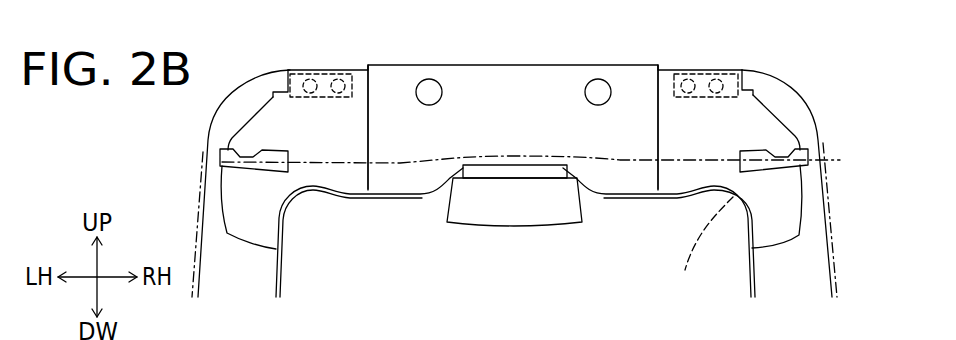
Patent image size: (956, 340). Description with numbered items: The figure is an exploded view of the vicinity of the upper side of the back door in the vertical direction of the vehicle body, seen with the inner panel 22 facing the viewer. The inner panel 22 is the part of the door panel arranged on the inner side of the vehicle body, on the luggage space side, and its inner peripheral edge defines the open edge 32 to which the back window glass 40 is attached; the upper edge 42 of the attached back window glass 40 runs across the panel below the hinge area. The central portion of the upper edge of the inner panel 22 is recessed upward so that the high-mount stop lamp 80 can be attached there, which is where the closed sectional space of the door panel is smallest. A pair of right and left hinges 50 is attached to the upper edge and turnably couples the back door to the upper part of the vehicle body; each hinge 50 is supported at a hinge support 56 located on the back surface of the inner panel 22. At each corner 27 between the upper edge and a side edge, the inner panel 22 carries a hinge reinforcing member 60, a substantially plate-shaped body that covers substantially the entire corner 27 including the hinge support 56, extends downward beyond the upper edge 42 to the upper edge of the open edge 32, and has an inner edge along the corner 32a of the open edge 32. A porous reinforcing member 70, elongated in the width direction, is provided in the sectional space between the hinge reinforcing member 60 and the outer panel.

The inner panel 22 is at (813, 98).
The corner 27 is at (800, 90).
The open edge 32 is at (752, 270).
The corner of the open edge 32a is at (698, 253).
The back window glass 40 is at (838, 240).
The upper edge of the back window glass 42 is at (605, 157).
The hinge 50 is at (283, 80).
The hinge support 56 is at (537, 48).
The hinge reinforcing member 60 is at (362, 80).
The porous reinforcing member 70 is at (222, 148).
The high-mount stop lamp 80 is at (513, 229).